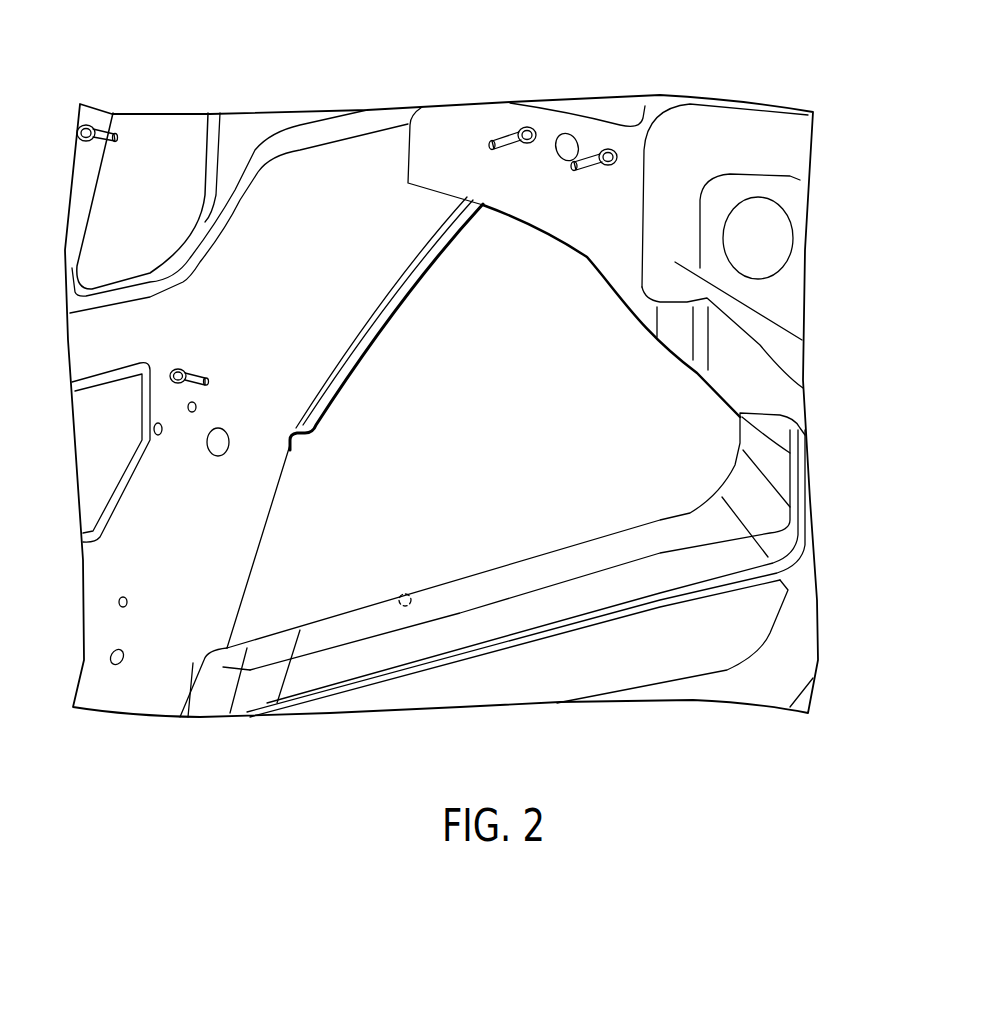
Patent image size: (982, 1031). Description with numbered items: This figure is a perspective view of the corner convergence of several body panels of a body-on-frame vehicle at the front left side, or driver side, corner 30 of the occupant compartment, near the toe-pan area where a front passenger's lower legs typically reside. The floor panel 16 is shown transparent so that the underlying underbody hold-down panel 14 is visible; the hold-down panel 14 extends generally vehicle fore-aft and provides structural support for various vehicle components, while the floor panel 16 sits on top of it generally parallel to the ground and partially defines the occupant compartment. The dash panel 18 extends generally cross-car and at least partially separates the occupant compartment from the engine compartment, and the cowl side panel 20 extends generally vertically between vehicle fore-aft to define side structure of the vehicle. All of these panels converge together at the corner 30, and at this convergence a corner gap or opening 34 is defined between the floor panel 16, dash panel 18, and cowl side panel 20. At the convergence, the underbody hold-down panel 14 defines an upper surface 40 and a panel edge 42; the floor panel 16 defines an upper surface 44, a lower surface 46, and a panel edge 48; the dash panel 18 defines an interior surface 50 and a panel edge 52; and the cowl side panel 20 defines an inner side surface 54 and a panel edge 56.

The underbody hold-down panel 14 is at (803, 623).
The floor panel 16 is at (700, 518).
The dash panel 18 is at (793, 147).
The cowl side panel 20 is at (93, 572).
The front left side corner 30 is at (820, 355).
The corner gap 34 is at (467, 461).
The upper surface 40 is at (197, 665).
The panel edge 42 is at (478, 620).
The upper surface 44 is at (518, 573).
The lower surface 46 is at (412, 593).
The panel edge 48 is at (608, 543).
The interior surface 50 is at (637, 299).
The panel edge 52 is at (587, 257).
The inner side surface 54 is at (250, 485).
The panel edge 56 is at (277, 398).